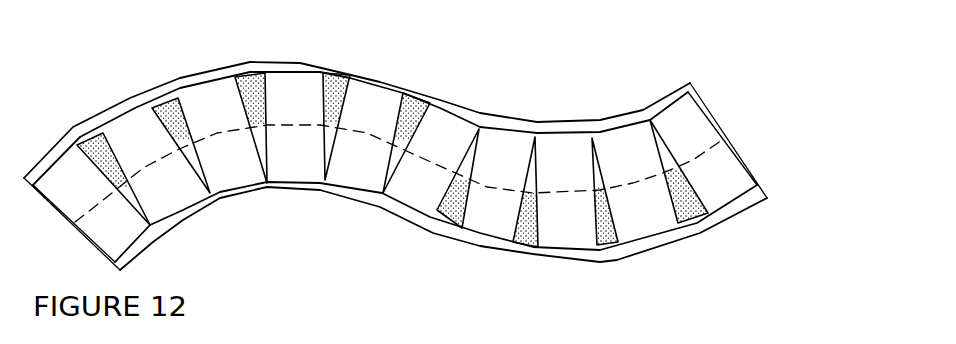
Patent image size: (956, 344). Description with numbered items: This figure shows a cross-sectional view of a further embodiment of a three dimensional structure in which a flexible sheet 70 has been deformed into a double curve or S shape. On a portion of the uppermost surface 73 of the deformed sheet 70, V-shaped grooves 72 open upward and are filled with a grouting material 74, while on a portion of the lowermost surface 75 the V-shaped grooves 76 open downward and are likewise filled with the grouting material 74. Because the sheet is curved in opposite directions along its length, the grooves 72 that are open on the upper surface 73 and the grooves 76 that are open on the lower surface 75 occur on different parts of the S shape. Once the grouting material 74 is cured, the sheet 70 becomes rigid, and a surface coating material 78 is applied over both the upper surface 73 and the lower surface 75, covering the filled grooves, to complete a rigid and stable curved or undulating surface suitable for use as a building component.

The flexible sheet 70 is at (800, 87).
The V-shaped grooves 72 is at (153, 88).
The uppermost surface 73 is at (535, 125).
The grouting material 74 is at (192, 118).
The lowermost surface 75 is at (481, 247).
The V-shaped grooves 76 is at (529, 250).
The surface coating material 78 is at (378, 78).